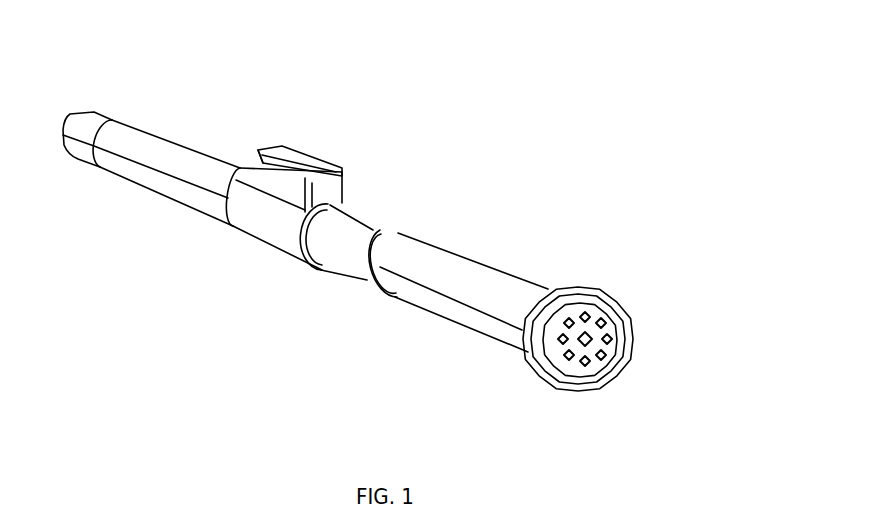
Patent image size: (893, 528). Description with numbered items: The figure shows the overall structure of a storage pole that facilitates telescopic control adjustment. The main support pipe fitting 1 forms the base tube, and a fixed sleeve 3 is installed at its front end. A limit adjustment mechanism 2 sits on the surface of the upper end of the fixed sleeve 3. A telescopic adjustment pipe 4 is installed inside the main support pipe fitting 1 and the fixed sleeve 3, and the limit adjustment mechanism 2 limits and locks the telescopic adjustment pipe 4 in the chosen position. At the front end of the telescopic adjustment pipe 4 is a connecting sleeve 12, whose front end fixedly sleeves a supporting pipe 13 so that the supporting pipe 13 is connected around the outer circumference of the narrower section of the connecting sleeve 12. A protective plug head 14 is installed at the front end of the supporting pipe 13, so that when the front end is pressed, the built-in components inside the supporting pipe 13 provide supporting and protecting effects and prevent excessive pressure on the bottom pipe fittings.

The main support pipe fitting 1 is at (177, 143).
The limit adjustment mechanism 2 is at (288, 190).
The fixed sleeve 3 is at (263, 222).
The telescopic adjustment pipe 4 is at (340, 240).
The connecting sleeve 12 is at (398, 232).
The supporting pipe 13 is at (497, 270).
The protective plug head 14 is at (623, 296).